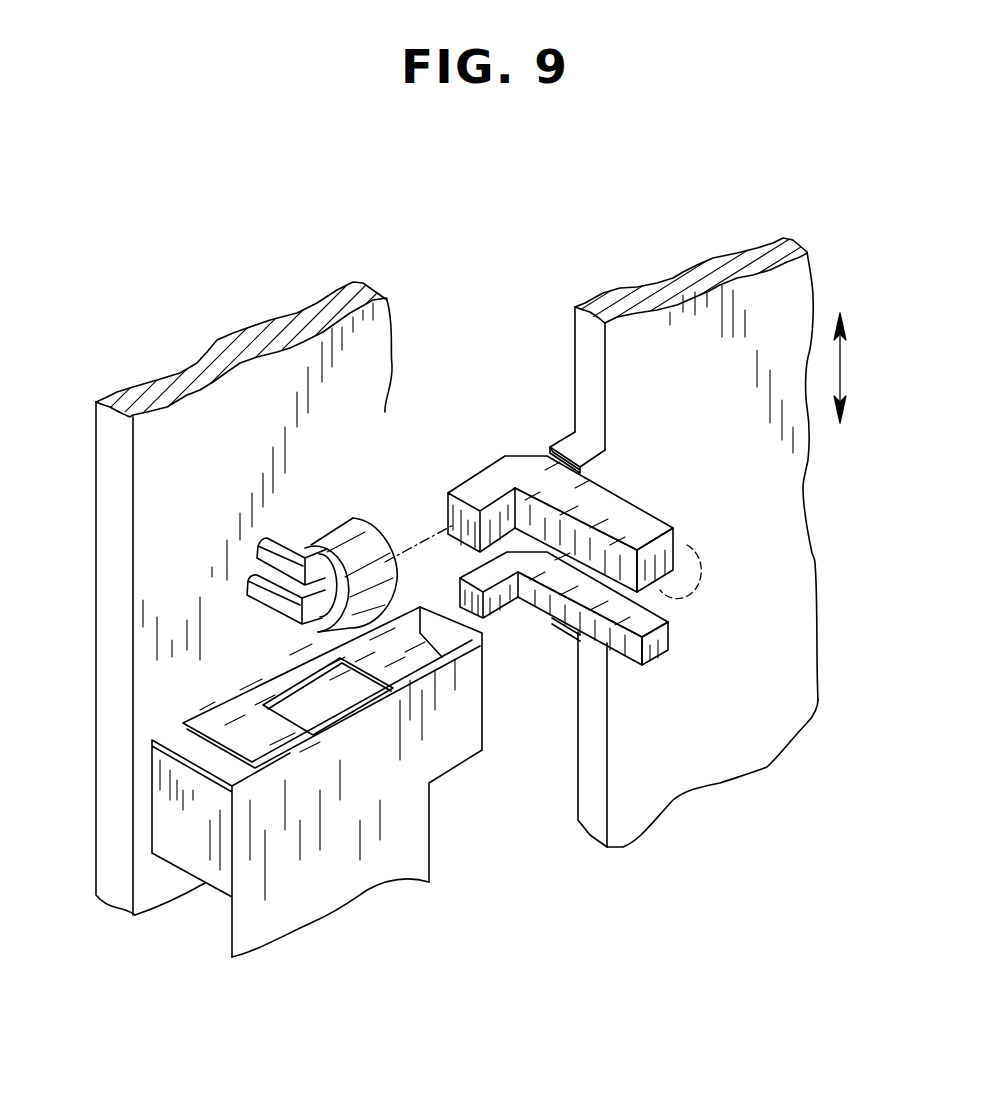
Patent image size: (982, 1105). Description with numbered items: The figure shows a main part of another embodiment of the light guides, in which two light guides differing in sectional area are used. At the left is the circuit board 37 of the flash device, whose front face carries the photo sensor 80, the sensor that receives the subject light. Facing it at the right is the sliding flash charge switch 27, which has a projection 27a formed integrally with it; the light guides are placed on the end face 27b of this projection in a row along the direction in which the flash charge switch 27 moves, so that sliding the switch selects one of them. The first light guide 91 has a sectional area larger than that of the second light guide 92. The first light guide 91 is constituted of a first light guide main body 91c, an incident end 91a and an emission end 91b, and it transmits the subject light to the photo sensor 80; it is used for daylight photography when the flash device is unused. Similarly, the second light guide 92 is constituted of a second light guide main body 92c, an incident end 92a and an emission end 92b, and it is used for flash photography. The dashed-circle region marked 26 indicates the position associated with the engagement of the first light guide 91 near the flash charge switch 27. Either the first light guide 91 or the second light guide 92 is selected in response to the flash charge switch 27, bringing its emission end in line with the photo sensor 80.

The circuit board 37 is at (197, 417).
The photo sensor 80 is at (352, 538).
The flash charge switch 27 is at (686, 534).
The projection 27a is at (575, 448).
The end face 27b is at (548, 445).
The engagement position 26 is at (692, 556).
The first light guide 91 is at (572, 487).
The incident end 91a is at (655, 595).
The emission end 91b is at (453, 493).
The first light guide main body 91c is at (625, 512).
The second light guide 92 is at (562, 618).
The incident end 92a is at (662, 652).
The emission end 92b is at (455, 585).
The second light guide main body 92c is at (628, 662).